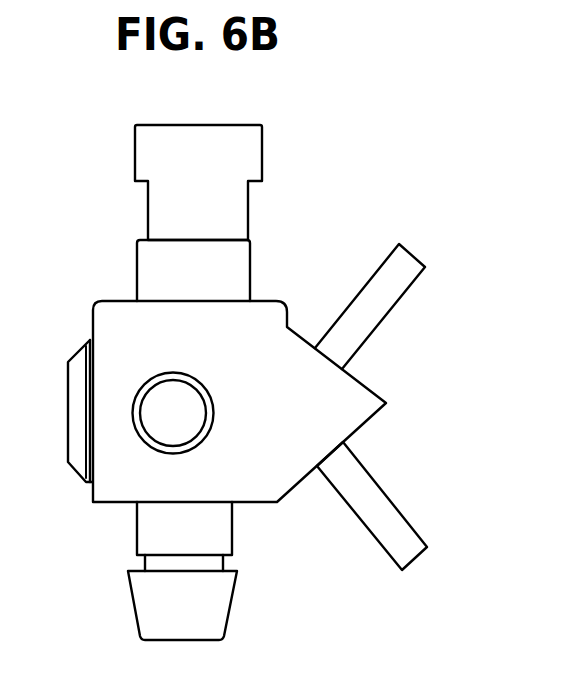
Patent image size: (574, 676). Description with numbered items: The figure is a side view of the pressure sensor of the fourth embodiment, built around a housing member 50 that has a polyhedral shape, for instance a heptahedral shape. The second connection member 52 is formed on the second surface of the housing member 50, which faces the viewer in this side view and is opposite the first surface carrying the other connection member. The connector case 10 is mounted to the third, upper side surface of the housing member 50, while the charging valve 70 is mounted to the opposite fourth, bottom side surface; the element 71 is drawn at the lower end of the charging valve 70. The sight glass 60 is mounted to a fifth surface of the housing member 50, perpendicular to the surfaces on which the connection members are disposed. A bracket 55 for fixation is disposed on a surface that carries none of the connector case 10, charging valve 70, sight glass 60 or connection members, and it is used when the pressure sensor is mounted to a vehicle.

The connector case 10 is at (238, 218).
The housing member 50 is at (261, 323).
The second connection member 52 is at (157, 375).
The bracket for fixation 55 is at (382, 320).
The sight glass 60 is at (73, 352).
The charging valve 70 is at (232, 528).
The tip 71 is at (233, 613).